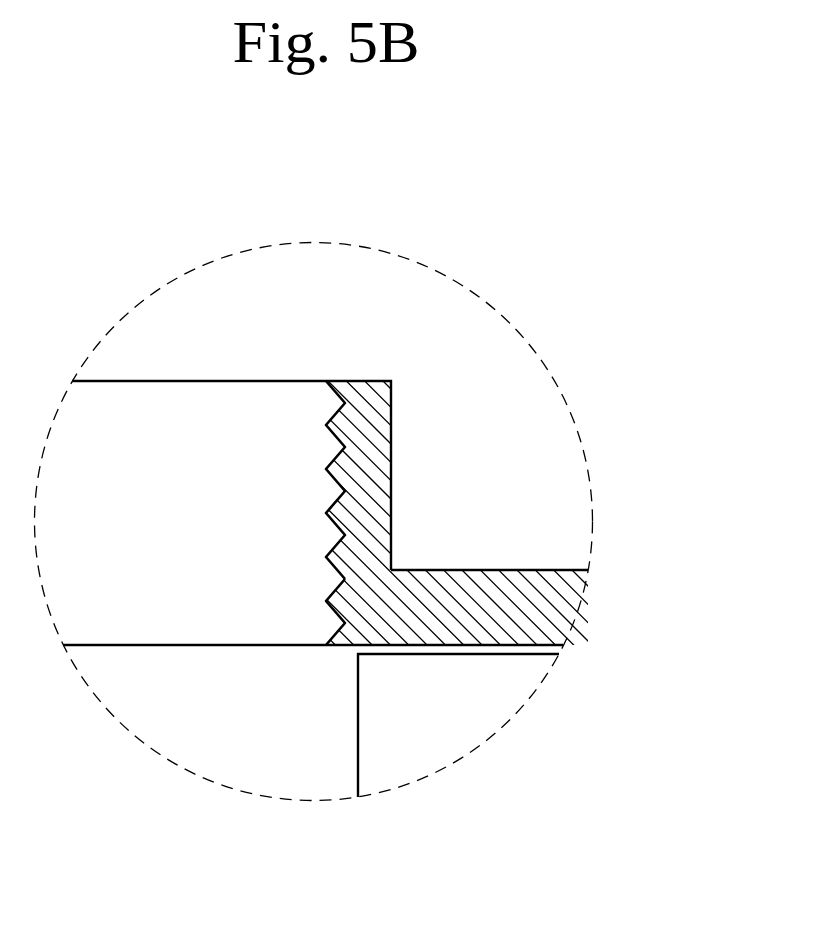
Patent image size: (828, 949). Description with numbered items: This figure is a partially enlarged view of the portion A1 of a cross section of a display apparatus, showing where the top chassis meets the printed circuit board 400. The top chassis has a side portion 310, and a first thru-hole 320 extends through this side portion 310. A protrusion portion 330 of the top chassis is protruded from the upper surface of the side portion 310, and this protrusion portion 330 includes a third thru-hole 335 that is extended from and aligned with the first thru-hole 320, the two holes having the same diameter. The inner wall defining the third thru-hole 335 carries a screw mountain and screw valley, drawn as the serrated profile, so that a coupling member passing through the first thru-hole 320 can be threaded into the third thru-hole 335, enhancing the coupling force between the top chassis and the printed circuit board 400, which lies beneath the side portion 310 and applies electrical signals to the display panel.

The portion A1 is at (388, 250).
The side portion 310 is at (563, 608).
The protrusion portion 330 is at (392, 497).
The third thru-hole 335 is at (315, 383).
The first thru-hole 320 is at (315, 573).
The printed circuit board 400 is at (475, 730).